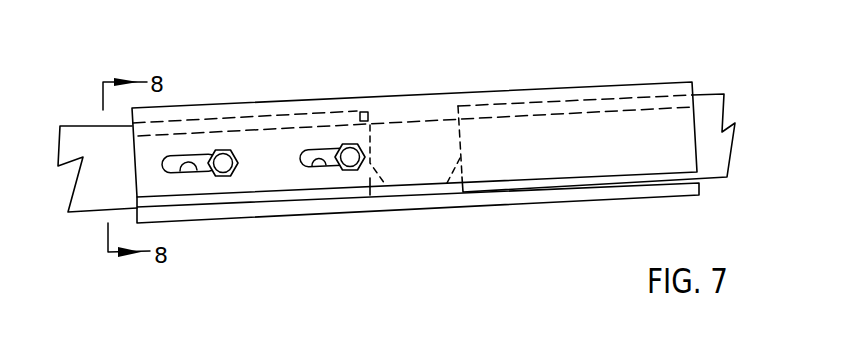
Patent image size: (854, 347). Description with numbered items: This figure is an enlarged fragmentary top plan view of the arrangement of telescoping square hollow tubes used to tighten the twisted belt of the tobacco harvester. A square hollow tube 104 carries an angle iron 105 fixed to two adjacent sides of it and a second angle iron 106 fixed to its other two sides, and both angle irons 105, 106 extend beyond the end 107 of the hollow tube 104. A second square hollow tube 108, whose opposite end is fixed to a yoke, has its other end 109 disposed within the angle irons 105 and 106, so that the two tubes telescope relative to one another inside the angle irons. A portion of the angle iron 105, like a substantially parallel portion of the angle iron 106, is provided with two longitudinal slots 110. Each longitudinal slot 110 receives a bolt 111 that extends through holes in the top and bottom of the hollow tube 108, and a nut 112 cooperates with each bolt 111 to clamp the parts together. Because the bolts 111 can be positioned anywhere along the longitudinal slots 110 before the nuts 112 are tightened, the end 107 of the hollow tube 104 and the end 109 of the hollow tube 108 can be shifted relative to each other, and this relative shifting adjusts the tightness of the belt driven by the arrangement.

The square hollow tube 104 is at (715, 95).
The angle iron 105 is at (478, 86).
The angle iron 106 is at (521, 210).
The end of the hollow tube 107 is at (447, 183).
The square hollow tube 108 is at (90, 210).
The other end of the hollow tube 109 is at (385, 184).
The longitudinal slot 110 is at (195, 169).
The bolt 111 is at (224, 149).
The nut 112 is at (237, 157).